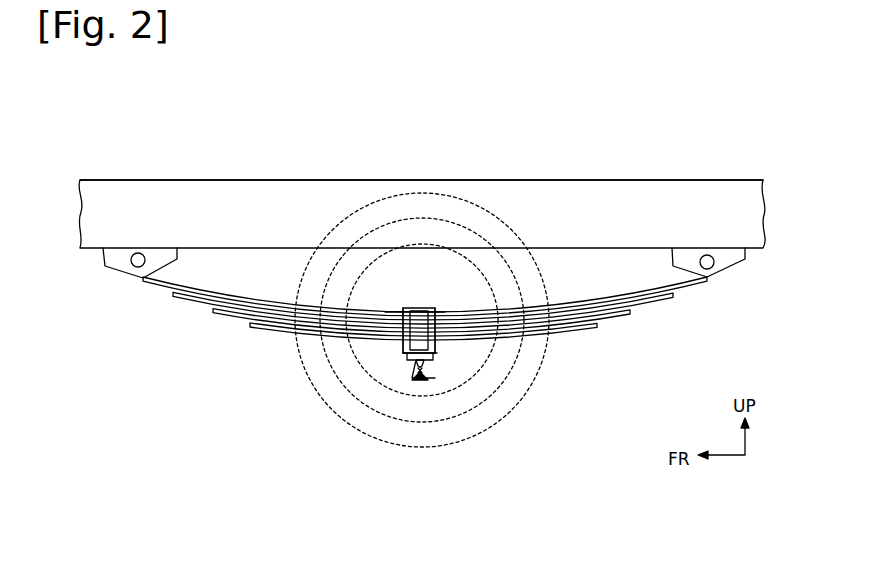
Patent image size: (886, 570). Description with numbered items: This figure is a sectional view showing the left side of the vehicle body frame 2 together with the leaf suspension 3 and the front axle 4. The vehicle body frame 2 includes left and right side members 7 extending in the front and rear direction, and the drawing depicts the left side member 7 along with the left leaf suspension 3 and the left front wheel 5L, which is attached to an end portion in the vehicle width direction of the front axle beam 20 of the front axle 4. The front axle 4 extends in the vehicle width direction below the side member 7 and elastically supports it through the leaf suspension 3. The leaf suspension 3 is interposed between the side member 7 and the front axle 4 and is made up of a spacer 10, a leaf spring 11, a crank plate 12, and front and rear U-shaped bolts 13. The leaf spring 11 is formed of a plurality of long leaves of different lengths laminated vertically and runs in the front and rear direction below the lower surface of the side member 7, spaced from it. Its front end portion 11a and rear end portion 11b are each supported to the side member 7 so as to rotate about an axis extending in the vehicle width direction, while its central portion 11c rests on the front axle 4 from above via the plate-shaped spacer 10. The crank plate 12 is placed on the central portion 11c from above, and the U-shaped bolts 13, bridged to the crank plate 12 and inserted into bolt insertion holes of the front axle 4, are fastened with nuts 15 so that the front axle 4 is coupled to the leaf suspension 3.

The vehicle body frame 2 is at (167, 178).
The leaf suspension 3 is at (402, 276).
The front axle 4 is at (430, 379).
The left front wheel 5L is at (462, 207).
The side member 7 is at (588, 180).
The spacer 10 is at (450, 354).
The leaf spring 11 is at (575, 332).
The front end portion 11a is at (142, 286).
The rear end portion 11b is at (688, 292).
The central portion 11c is at (388, 311).
The crank plate 12 is at (440, 308).
The U-shaped bolts 13 is at (433, 308).
The nuts 15 is at (405, 357).
The front axle beam 20 is at (412, 379).